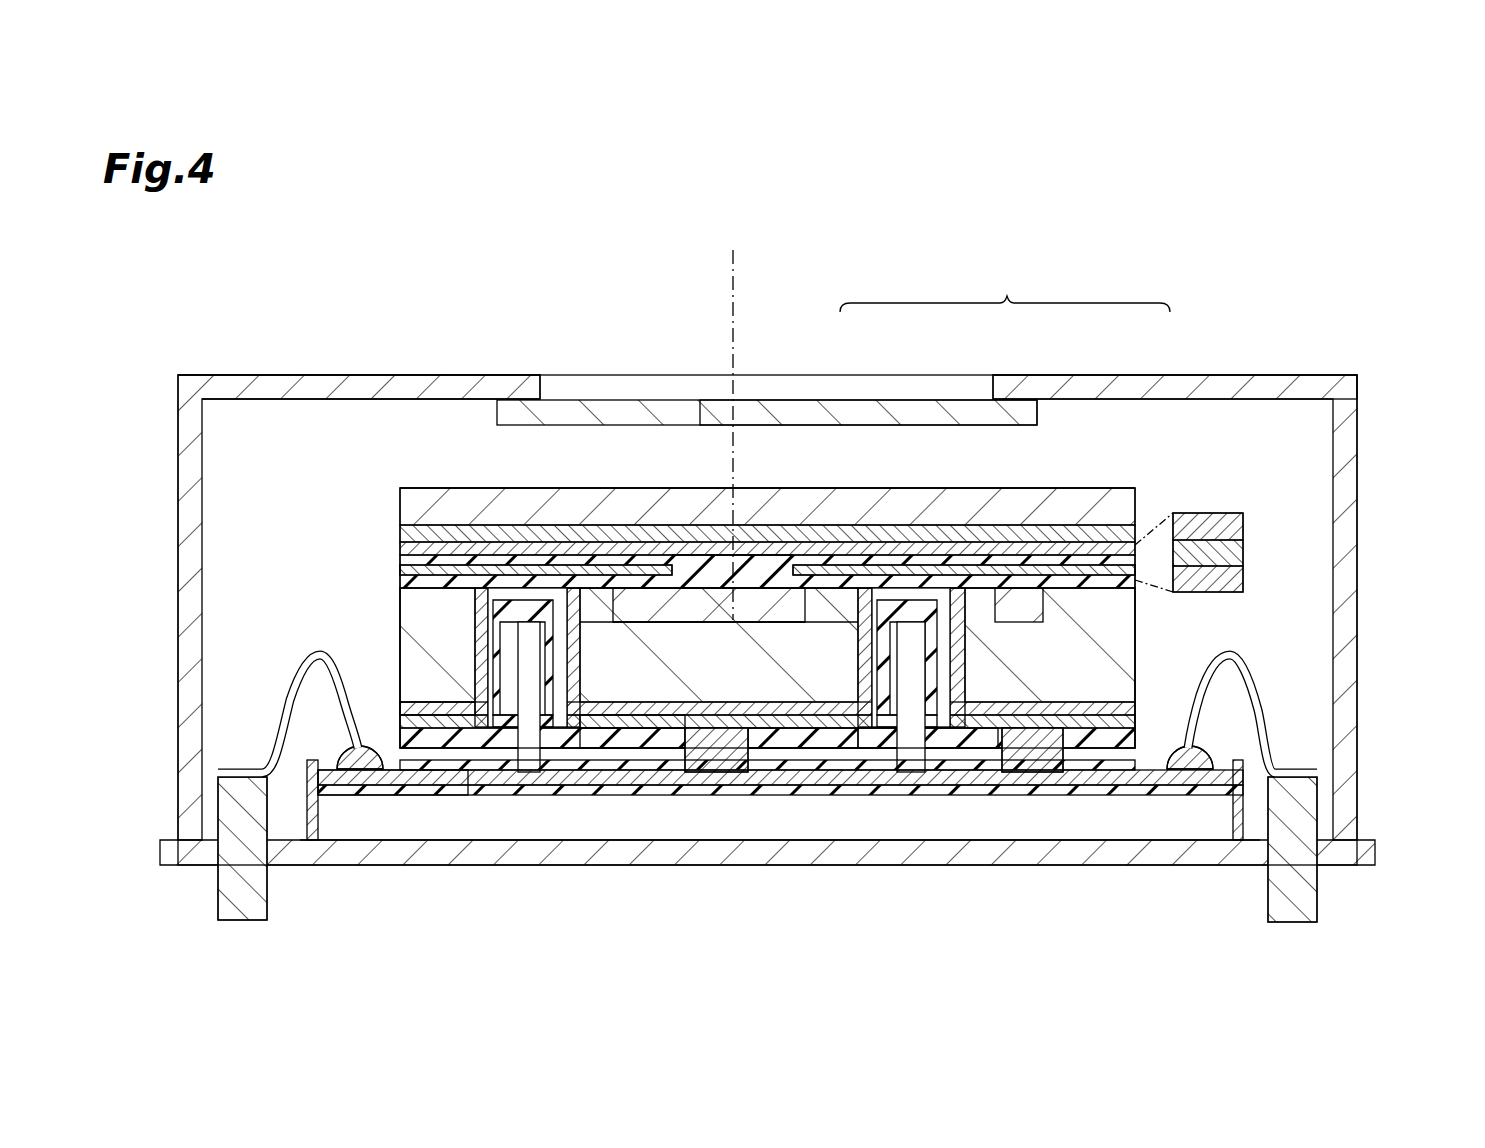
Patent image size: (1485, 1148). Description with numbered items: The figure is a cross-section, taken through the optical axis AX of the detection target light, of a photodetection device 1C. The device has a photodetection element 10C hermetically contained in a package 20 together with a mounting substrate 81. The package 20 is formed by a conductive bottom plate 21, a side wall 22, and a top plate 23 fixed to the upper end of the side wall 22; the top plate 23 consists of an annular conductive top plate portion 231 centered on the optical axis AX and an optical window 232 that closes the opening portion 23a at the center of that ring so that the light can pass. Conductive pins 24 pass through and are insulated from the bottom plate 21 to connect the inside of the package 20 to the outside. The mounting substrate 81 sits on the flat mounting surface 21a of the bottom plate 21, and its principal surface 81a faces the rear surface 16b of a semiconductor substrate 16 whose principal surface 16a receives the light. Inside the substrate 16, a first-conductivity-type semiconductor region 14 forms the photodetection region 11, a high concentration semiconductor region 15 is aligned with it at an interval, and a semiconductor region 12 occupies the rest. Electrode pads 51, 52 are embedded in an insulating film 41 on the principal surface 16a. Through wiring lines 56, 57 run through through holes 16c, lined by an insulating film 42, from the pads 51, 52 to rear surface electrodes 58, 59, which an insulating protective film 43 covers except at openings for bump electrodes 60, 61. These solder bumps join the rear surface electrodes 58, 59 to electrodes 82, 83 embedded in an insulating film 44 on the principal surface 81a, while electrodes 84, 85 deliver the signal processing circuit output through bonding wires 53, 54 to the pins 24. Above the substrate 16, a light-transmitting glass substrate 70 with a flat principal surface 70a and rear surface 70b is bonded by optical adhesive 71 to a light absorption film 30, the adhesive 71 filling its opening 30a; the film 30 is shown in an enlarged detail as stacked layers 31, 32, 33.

The photodetection device 1C is at (1278, 308).
The photodetection element 10C is at (488, 462).
The photodetection region 11 is at (705, 650).
The semiconductor region 12 is at (610, 650).
The semiconductor region 14 is at (668, 612).
The high concentration semiconductor region 15 is at (908, 700).
The semiconductor substrate 16 is at (1138, 648).
The principal surface 16a is at (1100, 590).
The rear surface 16b is at (430, 760).
The through hole 16c is at (545, 728).
The package 20 is at (345, 375).
The bottom plate 21 is at (700, 855).
The mounting surface 21a is at (832, 840).
The side wall 22 is at (190, 546).
The top plate 23 is at (1005, 290).
The opening portion 23a is at (540, 400).
The top plate portion 231 is at (1140, 388).
The optical window 232 is at (865, 415).
The pin 24 is at (252, 912).
The light absorption film 30 is at (600, 548).
The opening 30a is at (790, 548).
The first electrode layer 31 is at (1243, 522).
The second electrode layer 32 is at (1243, 553).
The third electrode layer 33 is at (1243, 580).
The insulating film 41 is at (703, 600).
The insulating film 42 is at (470, 650).
The insulating protective film 43 is at (1013, 600).
The insulating film 44 is at (760, 735).
The electrode pad 51 is at (497, 700).
The electrode pad 52 is at (940, 728).
The bonding wire 53 is at (292, 690).
The bonding wire 54 is at (1258, 712).
The through wiring line 56 is at (525, 690).
The through wiring line 57 is at (878, 740).
The rear surface electrode 58 is at (620, 708).
The rear surface electrode 59 is at (940, 720).
The bump electrode 60 is at (655, 735).
The bump electrode 61 is at (1030, 750).
The glass substrate 70 is at (400, 505).
The principal surface 70a is at (437, 488).
The rear surface 70b is at (400, 572).
The optical adhesive 71 is at (400, 533).
The mounting substrate 81 is at (1085, 785).
The principal surface 81a is at (463, 780).
The electrode 82 is at (720, 750).
The electrode 83 is at (905, 765).
The electrode 84 is at (433, 705).
The electrode 85 is at (1125, 780).
The optical axis AX is at (733, 275).